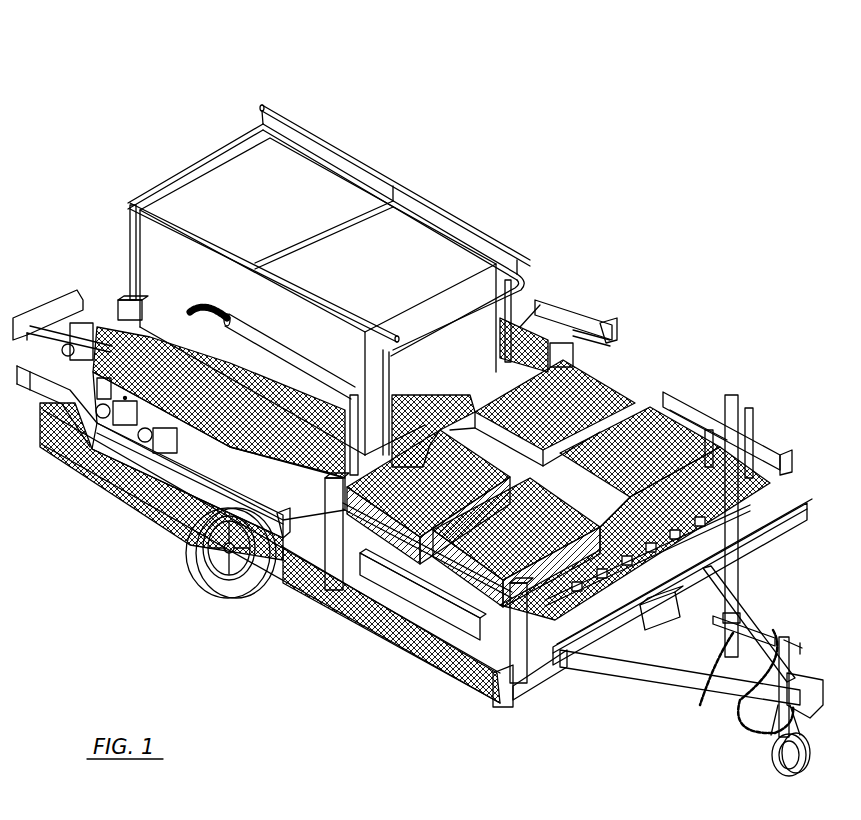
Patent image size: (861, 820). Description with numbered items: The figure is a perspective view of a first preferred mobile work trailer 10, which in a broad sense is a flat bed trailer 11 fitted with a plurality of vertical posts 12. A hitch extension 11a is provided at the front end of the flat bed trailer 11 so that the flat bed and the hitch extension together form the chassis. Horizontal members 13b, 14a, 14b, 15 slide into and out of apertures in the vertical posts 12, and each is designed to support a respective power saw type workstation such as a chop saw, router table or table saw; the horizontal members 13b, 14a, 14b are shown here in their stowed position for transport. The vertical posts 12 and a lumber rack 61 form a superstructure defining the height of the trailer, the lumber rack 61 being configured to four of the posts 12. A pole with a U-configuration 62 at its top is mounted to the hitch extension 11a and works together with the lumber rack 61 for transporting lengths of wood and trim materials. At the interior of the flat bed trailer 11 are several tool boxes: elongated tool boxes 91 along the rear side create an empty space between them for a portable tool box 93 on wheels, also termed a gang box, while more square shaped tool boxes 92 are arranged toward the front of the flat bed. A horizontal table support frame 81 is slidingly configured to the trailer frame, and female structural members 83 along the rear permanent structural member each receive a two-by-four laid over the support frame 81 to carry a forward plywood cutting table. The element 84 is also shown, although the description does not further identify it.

The mobile work trailer 10 is at (529, 92).
The flat bed trailer 11 is at (297, 593).
The hitch extension 11a is at (660, 673).
The vertical posts 12 is at (330, 562).
The horizontal member 13b is at (460, 687).
The horizontal member 14a is at (590, 307).
The horizontal member 14b is at (100, 445).
The horizontal member 15 is at (40, 308).
The lumber rack 61 is at (397, 206).
The pole with a U-configuration 62 is at (748, 410).
The horizontal table support frame 81 is at (570, 656).
The female structural members 83 is at (540, 670).
The jack post 84 is at (773, 540).
The elongated tool boxes 91 is at (523, 327).
The square shaped tool boxes 92 is at (441, 485).
The portable tool box 93 is at (130, 205).